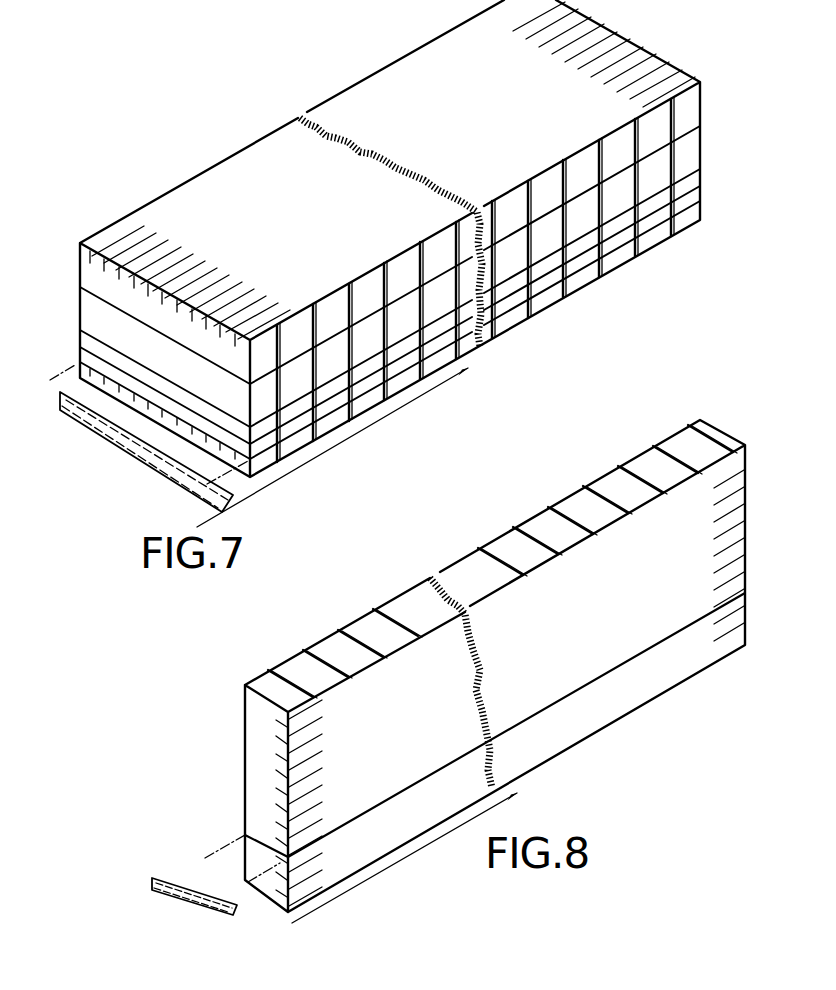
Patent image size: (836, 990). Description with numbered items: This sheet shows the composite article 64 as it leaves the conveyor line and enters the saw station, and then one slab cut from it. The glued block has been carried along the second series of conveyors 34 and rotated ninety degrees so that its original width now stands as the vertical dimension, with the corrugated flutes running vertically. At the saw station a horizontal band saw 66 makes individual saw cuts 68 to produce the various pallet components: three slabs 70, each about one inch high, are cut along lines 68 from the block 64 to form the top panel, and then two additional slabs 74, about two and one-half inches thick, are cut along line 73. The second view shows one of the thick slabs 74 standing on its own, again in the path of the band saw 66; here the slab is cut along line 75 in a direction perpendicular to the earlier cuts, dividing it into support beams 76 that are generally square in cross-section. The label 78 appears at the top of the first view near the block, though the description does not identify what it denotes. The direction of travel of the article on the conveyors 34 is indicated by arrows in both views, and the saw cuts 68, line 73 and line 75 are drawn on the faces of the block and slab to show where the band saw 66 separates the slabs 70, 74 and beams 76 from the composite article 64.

In FIG. 7, the second series of conveyors 34 is at (363, 399).
In FIG. 8, the second series of conveyors 34 is at (284, 753).
In FIG. 7, the composite article 64 is at (636, 24).
In FIG. 7, the horizontal band saw 66 is at (112, 447).
In FIG. 8, the horizontal band saw 66 is at (170, 876).
In FIG. 7, the saw cuts 68 is at (632, 212).
In FIG. 7, the slabs 70 is at (698, 214).
In FIG. 7, the cutting line 73 is at (618, 172).
In FIG. 7, the slabs 74 is at (690, 146).
In FIG. 8, the slabs 74 is at (700, 421).
In FIG. 8, the cutting line 75 is at (645, 653).
In FIG. 8, the support beams 76 is at (593, 724).
In FIG. 7, the stack 78 is at (392, 173).